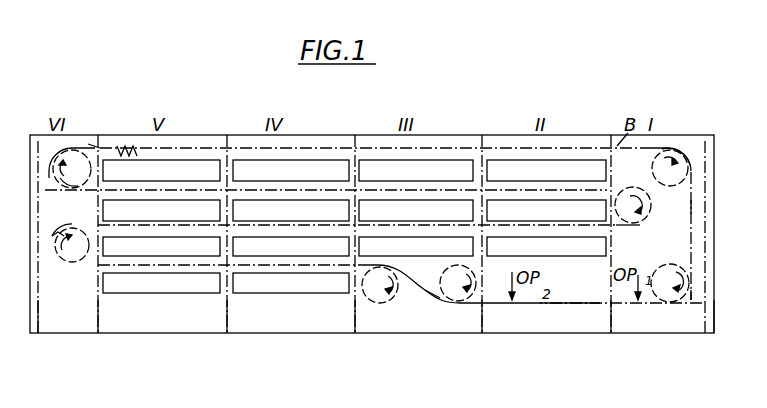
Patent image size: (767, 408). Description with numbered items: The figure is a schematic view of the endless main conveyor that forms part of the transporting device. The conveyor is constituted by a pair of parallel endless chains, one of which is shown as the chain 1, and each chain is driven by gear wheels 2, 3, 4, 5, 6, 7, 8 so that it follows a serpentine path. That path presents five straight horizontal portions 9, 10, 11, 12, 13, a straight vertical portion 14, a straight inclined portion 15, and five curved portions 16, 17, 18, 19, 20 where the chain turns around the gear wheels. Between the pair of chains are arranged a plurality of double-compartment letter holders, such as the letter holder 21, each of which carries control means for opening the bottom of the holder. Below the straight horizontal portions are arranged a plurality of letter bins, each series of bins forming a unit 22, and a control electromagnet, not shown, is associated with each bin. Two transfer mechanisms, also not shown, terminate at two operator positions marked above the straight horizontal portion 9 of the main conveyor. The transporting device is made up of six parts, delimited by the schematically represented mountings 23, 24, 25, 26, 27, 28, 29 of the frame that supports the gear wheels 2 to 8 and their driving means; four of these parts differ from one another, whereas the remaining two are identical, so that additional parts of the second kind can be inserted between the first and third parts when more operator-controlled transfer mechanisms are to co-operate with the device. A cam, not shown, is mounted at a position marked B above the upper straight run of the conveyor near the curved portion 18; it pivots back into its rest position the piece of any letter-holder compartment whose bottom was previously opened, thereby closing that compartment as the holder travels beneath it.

The endless chain 1 is at (328, 147).
The gear wheel 2 is at (458, 283).
The gear wheel 3 is at (380, 285).
The gear wheel 4 is at (72, 245).
The gear wheel 5 is at (633, 205).
The gear wheel 6 is at (72, 169).
The gear wheel 7 is at (670, 168).
The gear wheel 8 is at (670, 283).
The straight horizontal portion 9 is at (568, 304).
The straight horizontal portion 10 is at (211, 283).
The straight horizontal portion 11 is at (97, 226).
The straight horizontal portion 12 is at (82, 187).
The straight horizontal portion 13 is at (88, 146).
The straight vertical portion 14 is at (690, 207).
The straight inclined portion 15 is at (430, 287).
The curved portion 16 is at (58, 233).
The curved portion 17 is at (643, 215).
The curved portion 18 is at (76, 187).
The curved portion 19 is at (673, 148).
The curved portion 20 is at (686, 303).
The double-compartment letter holder 21 is at (118, 146).
The unit of letter bins 22 is at (170, 170).
The frame mounting 23 is at (714, 320).
The frame mounting 24 is at (611, 320).
The frame mounting 25 is at (482, 320).
The frame mounting 26 is at (355, 320).
The frame mounting 27 is at (227, 320).
The frame mounting 28 is at (98, 320).
The frame mounting 29 is at (38, 320).